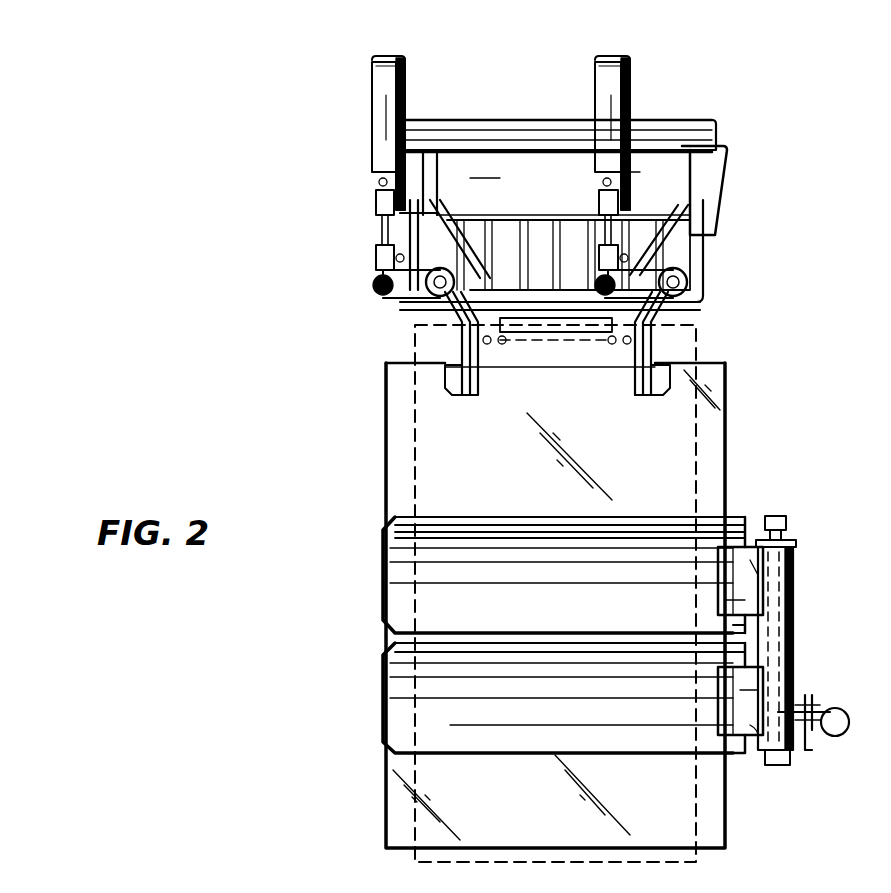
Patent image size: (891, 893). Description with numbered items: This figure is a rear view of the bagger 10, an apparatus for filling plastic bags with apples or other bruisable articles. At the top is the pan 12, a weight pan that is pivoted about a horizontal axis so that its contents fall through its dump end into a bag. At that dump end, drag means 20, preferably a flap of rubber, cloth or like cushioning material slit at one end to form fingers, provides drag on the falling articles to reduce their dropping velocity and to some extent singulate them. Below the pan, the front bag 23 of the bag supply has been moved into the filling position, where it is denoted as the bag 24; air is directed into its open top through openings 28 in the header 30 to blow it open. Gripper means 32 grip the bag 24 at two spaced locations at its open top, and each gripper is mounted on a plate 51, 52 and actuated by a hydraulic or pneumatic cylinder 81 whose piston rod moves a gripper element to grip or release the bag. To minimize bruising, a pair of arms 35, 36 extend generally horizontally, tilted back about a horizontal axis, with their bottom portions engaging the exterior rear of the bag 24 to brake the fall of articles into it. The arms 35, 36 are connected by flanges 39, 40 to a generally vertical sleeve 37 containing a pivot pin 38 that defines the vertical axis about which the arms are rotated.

The bagger 10 is at (803, 75).
The pan 12 is at (690, 135).
The drag means 20 is at (528, 245).
The front bag 23 is at (432, 358).
The bag 24 is at (724, 462).
The openings 28 is at (630, 343).
The header 30 is at (548, 340).
The gripper means 32 is at (380, 344).
The arm 35 is at (398, 622).
The arm 36 is at (398, 716).
The sleeve 37 is at (795, 660).
The pivot pin 38 is at (785, 530).
The flange 39 is at (755, 606).
The flange 40 is at (735, 750).
The plate 51 is at (636, 398).
The plate 52 is at (478, 398).
The cylinder 81 is at (380, 116).